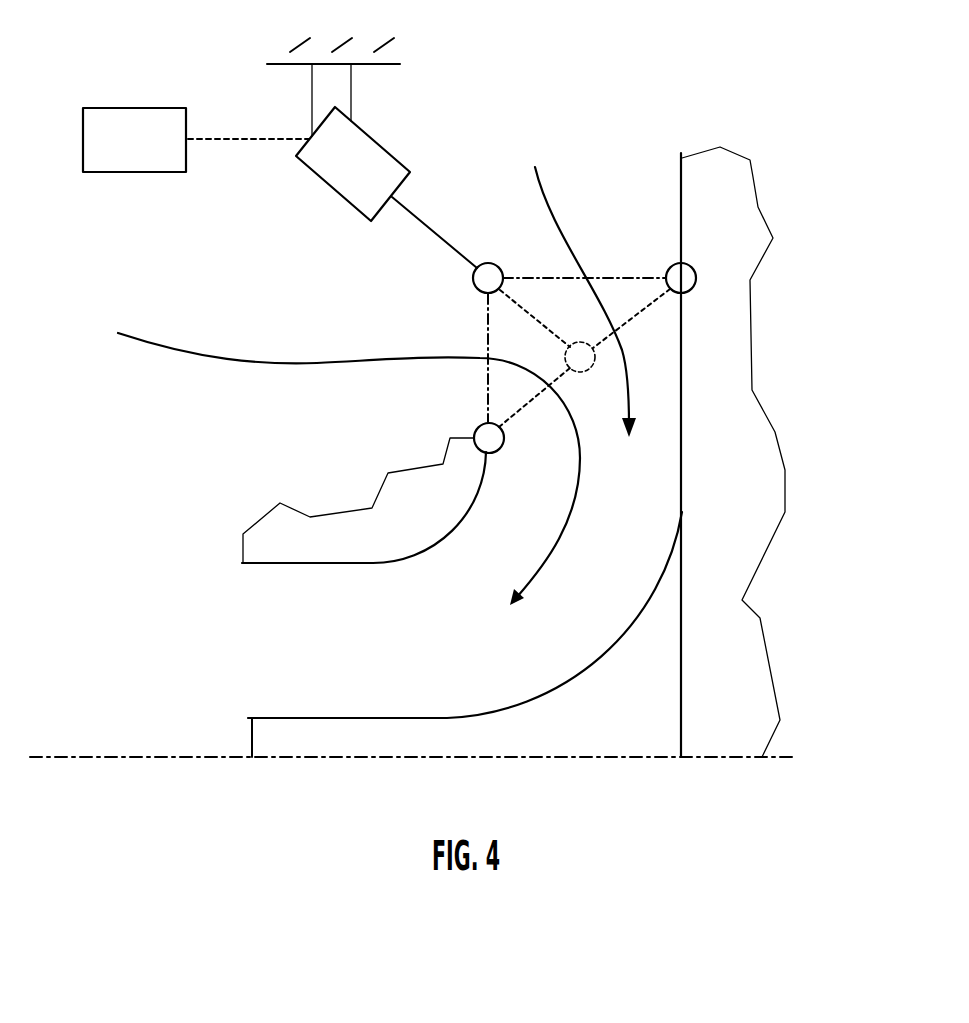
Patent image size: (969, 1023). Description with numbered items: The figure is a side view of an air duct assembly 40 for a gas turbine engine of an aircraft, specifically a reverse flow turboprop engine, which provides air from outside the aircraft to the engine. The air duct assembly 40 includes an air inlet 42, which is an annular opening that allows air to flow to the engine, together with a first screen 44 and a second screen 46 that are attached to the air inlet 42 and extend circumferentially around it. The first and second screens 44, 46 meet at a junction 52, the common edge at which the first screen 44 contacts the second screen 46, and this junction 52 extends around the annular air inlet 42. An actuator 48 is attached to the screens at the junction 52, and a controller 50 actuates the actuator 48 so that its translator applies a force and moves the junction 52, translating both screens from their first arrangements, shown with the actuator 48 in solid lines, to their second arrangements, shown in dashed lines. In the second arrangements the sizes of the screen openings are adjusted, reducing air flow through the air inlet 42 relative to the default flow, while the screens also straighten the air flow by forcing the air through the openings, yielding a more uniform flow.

The air duct assembly 40 is at (636, 74).
The air inlet 42 is at (630, 236).
The first screen 44 is at (486, 333).
The second screen 46 is at (538, 276).
The actuator 48 is at (398, 140).
The controller 50 is at (170, 116).
The junction 52 is at (485, 278).